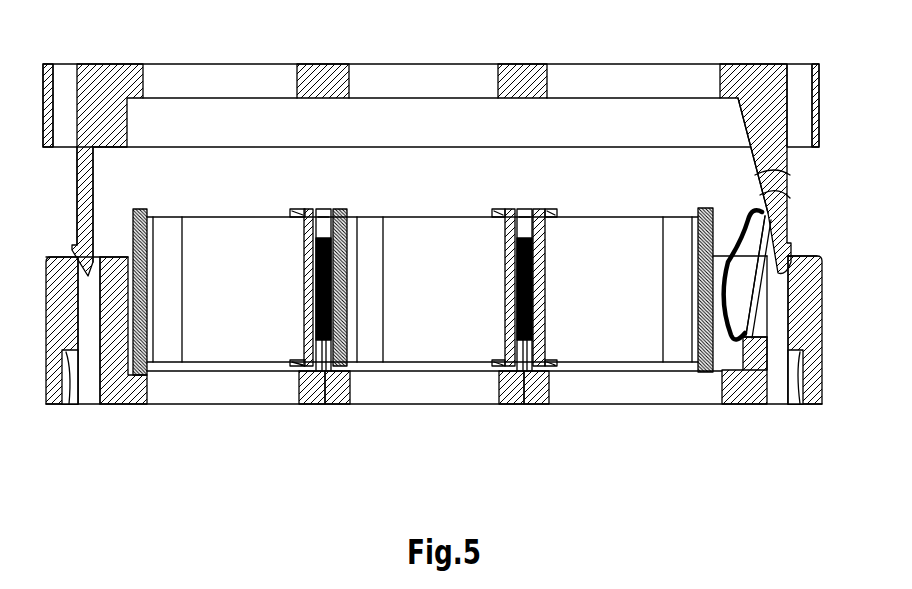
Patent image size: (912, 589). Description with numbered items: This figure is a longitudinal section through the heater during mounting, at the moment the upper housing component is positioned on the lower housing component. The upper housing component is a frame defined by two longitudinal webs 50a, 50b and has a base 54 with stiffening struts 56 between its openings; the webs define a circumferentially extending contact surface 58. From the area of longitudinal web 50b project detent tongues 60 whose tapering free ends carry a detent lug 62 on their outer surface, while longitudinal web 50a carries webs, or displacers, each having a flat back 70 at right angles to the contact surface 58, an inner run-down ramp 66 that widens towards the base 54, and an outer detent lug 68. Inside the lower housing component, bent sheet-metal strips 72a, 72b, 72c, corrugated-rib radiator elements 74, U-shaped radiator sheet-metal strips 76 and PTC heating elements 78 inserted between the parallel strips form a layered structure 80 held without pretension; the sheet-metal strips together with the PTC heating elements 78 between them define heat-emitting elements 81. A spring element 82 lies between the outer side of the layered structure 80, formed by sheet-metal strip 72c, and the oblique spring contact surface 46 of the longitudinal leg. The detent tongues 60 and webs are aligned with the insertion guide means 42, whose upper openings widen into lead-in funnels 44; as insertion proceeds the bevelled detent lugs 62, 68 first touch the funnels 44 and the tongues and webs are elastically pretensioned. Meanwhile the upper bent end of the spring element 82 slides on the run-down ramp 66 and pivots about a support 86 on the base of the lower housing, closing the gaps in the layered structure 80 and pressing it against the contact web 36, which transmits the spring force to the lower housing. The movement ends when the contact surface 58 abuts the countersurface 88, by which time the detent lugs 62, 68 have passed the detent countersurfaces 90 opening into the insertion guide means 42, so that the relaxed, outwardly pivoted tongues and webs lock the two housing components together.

The contact web 36 is at (118, 372).
The insertion guide means 42 is at (89, 335).
The lead-in funnel 44 is at (103, 246).
The spring contact surface 46 is at (742, 313).
The longitudinal web 50a is at (756, 75).
The longitudinal web 50b is at (110, 75).
The base 54 is at (133, 98).
The stiffening strut 56 is at (325, 76).
The contact surface 58 is at (800, 150).
The detent tongue 60 is at (77, 149).
The detent lug 62 is at (72, 247).
The run-down ramp 66 is at (742, 118).
The detent lug 68 is at (787, 266).
The flat back 70 is at (757, 178).
The sheet-metal strip 72a is at (704, 372).
The sheet-metal strip 72b is at (342, 372).
The sheet-metal strip 72c is at (146, 375).
The corrugated-rib radiator element 74 is at (236, 252).
The radiator sheet-metal strip 76 is at (301, 374).
The PTC heating element 78 is at (324, 374).
The layered structure 80 is at (386, 170).
The heat-emitting element 81 is at (320, 192).
The spring element 82 is at (778, 196).
The support 86 is at (748, 382).
The countersurface 88 is at (55, 256).
The detent countersurface 90 is at (66, 365).